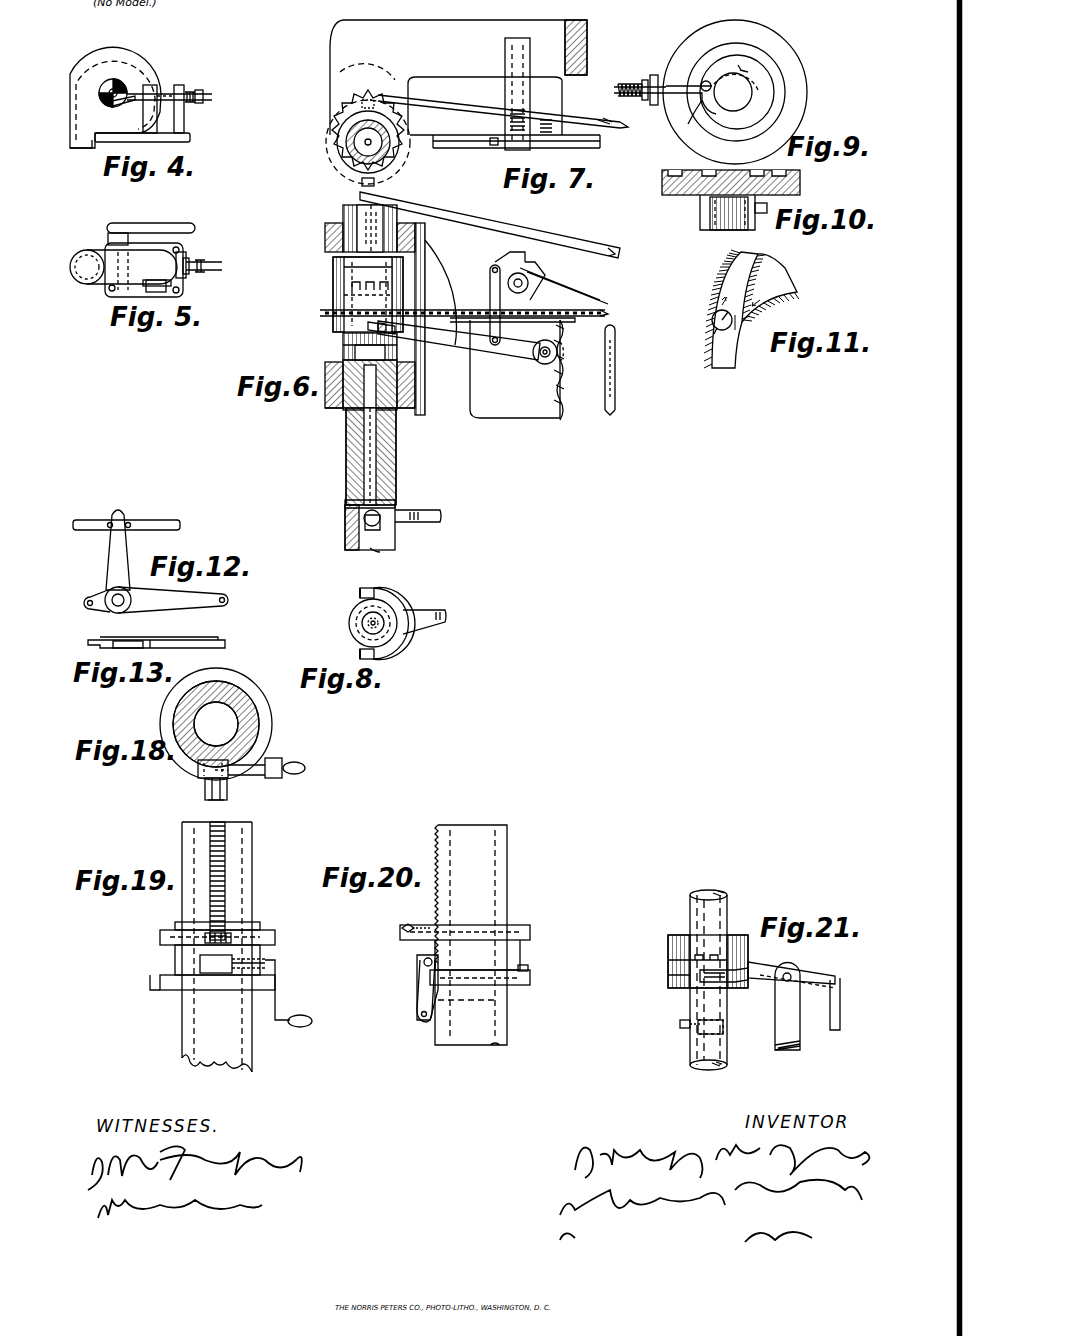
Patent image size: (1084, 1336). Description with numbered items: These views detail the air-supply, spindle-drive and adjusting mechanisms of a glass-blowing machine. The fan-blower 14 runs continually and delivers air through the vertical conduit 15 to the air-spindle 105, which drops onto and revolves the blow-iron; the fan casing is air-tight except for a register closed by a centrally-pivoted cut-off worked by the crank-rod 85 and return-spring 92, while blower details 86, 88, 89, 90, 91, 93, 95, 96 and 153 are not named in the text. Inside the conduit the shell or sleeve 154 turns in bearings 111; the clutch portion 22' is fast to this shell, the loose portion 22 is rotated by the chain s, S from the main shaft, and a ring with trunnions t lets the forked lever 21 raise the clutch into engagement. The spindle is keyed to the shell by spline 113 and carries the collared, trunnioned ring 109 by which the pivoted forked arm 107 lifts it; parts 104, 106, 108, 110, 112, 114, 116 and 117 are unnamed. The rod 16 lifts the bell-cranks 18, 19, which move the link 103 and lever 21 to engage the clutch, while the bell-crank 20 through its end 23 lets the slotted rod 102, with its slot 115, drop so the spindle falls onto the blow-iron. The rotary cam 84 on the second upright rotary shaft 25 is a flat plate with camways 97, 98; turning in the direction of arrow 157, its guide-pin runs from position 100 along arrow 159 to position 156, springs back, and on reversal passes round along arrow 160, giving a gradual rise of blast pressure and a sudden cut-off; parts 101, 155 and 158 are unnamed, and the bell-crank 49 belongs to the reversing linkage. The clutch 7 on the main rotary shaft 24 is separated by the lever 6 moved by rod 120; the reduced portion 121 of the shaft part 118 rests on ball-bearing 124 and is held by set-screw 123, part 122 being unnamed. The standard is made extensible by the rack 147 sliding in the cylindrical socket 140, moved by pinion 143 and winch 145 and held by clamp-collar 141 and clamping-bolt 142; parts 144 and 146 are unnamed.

In FIG. 21, the lever 6 is at (820, 972).
In FIG. 21, the clutch 7 is at (675, 975).
In FIG. 4, the fan-blower 14 is at (128, 62).
In FIG. 5, the fan-blower 14 is at (123, 258).
In FIG. 6, the vertical conduit 15 is at (343, 213).
In FIG. 12, the rod 16 is at (150, 520).
In FIG. 6, the bell-crank 18 is at (535, 262).
In FIG. 12, the bell-crank 18 is at (112, 556).
In FIG. 13, the bell-crank 18 is at (130, 640).
In FIG. 6, the bell-crank 19 is at (509, 251).
In FIG. 12, the bell-crank 19 is at (92, 609).
In FIG. 6, the bell-crank 20 is at (590, 330).
In FIG. 12, the bell-crank 20 is at (173, 600).
In FIG. 13, the bell-crank 20 is at (178, 640).
In FIG. 7, the forked lever 21 is at (465, 142).
In FIG. 6, the forked lever 21 is at (459, 342).
In FIG. 6, the clutch 22 is at (344, 294).
In FIG. 6, the clutch portion 22' is at (339, 267).
In FIG. 6, the end of bell-crank 23 is at (565, 312).
In FIG. 21, the main rotary shaft 24 is at (728, 990).
In FIG. 10, the second upright rotary shaft 25 is at (710, 226).
In FIG. 9, the bell-crank 49 is at (720, 58).
In FIG. 9, the rotary cam 84 is at (765, 42).
In FIG. 10, the rotary cam 84 is at (712, 212).
In FIG. 4, the crank-rod 85 is at (205, 92).
In FIG. 5, the crank-rod 85 is at (214, 264).
In FIG. 9, the crank-rod 85 is at (663, 75).
In FIG. 4, the bracket 86 is at (119, 103).
In FIG. 5, the bracket 86 is at (136, 284).
In FIG. 4, the fan wheel 88 is at (124, 92).
In FIG. 4, the fan blade 89 is at (116, 84).
In FIG. 4, the post 90 is at (155, 86).
In FIG. 5, the post 90 is at (156, 290).
In FIG. 4, the plate 91 is at (181, 88).
In FIG. 5, the plate 91 is at (186, 256).
In FIG. 9, the plate 91 is at (652, 75).
In FIG. 4, the return-spring 92 is at (201, 105).
In FIG. 5, the return-spring 92 is at (190, 274).
In FIG. 9, the return-spring 92 is at (636, 94).
In FIG. 5, the bar 93 is at (178, 226).
In FIG. 4, the casing wall 95 is at (82, 116).
In FIG. 4, the base plate 96 is at (190, 136).
In FIG. 9, the camway 97 is at (774, 94).
In FIG. 10, the camway 97 is at (672, 170).
In FIG. 11, the camway 97 is at (750, 309).
In FIG. 9, the camway 98 is at (778, 72).
In FIG. 10, the camway 98 is at (774, 158).
In FIG. 11, the camway 98 is at (770, 288).
In FIG. 9, the position 100 is at (703, 81).
In FIG. 11, the cam follower 101 is at (712, 318).
In FIG. 6, the slotted rod 102 is at (615, 408).
In FIG. 6, the link 103 is at (490, 292).
In FIG. 7, the gear 104 is at (400, 170).
In FIG. 6, the air-spindle 105 is at (346, 474).
In FIG. 6, the bore 106 is at (363, 444).
In FIG. 6, the pivoted lever-arm 107 is at (428, 522).
In FIG. 8, the pivoted lever-arm 107 is at (405, 600).
In FIG. 6, the head 108 is at (382, 552).
In FIG. 8, the head 108 is at (363, 614).
In FIG. 6, the collared and trunnioned ring 109 is at (345, 520).
In FIG. 8, the collared and trunnioned ring 109 is at (364, 598).
In FIG. 6, the lug 110 is at (348, 504).
In FIG. 8, the lug 110 is at (372, 590).
In FIG. 6, the bearings 111 is at (415, 246).
In FIG. 6, the collar 112 is at (400, 370).
In FIG. 6, the spline 113 is at (400, 388).
In FIG. 7, the bar 114 is at (465, 85).
In FIG. 6, the bar 114 is at (517, 370).
In FIG. 6, the slot 115 is at (615, 352).
In FIG. 7, the rod end 116 is at (548, 112).
In FIG. 7, the rod 117 is at (510, 92).
In FIG. 6, the rod 117 is at (540, 292).
In FIG. 21, the rod 117 is at (792, 1016).
In FIG. 21, the shaft part 118 is at (726, 907).
In FIG. 21, the rod 120 is at (851, 1004).
In FIG. 21, the reduced portion 121 is at (700, 998).
In FIG. 21, the sleeve 122 is at (700, 930).
In FIG. 21, the set-screw 123 is at (680, 1026).
In FIG. 21, the ball-bearing 124 is at (724, 1032).
In FIG. 18, the cylindrical socket 140 is at (258, 732).
In FIG. 19, the cylindrical socket 140 is at (262, 952).
In FIG. 20, the cylindrical socket 140 is at (508, 950).
In FIG. 18, the clamp-collar 141 is at (270, 746).
In FIG. 19, the clamp-collar 141 is at (262, 945).
In FIG. 20, the clamp-collar 141 is at (530, 934).
In FIG. 18, the clamping-bolt 142 is at (205, 792).
In FIG. 19, the clamping-bolt 142 is at (240, 932).
In FIG. 20, the clamping-bolt 142 is at (400, 934).
In FIG. 18, the pinion 143 is at (207, 800).
In FIG. 19, the pinion 143 is at (238, 962).
In FIG. 20, the pinion 143 is at (409, 987).
In FIG. 18, the rod 144 is at (250, 777).
In FIG. 18, the winch 145 is at (290, 776).
In FIG. 19, the winch 145 is at (282, 984).
In FIG. 20, the winch 145 is at (418, 1006).
In FIG. 19, the post 146 is at (217, 947).
In FIG. 20, the post 146 is at (500, 1016).
In FIG. 18, the rack 147 is at (198, 766).
In FIG. 19, the rack 147 is at (228, 878).
In FIG. 20, the rack 147 is at (436, 854).
In FIG. 5, the block 153 is at (114, 226).
In FIG. 6, the vertical sleeve 154 is at (325, 400).
In FIG. 9, the hub 155 is at (733, 92).
In FIG. 9, the position 156 is at (683, 97).
In FIG. 9, the arrow 157 is at (706, 46).
In FIG. 9, the spring 158 is at (641, 74).
In FIG. 9, the arrow 159 is at (744, 58).
In FIG. 9, the arrow 160 is at (755, 67).
In FIG. 6, the chain s is at (453, 311).
In FIG. 6, the strip end S is at (612, 310).
In FIG. 6, the trunnions t is at (337, 328).